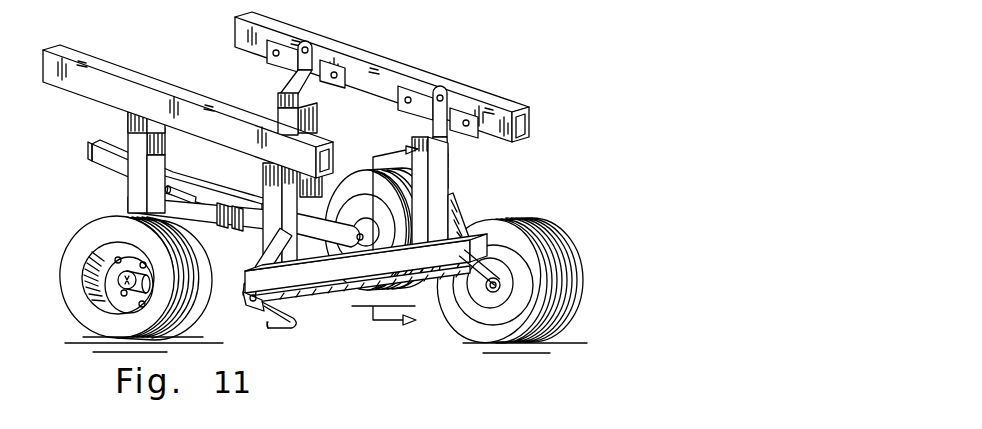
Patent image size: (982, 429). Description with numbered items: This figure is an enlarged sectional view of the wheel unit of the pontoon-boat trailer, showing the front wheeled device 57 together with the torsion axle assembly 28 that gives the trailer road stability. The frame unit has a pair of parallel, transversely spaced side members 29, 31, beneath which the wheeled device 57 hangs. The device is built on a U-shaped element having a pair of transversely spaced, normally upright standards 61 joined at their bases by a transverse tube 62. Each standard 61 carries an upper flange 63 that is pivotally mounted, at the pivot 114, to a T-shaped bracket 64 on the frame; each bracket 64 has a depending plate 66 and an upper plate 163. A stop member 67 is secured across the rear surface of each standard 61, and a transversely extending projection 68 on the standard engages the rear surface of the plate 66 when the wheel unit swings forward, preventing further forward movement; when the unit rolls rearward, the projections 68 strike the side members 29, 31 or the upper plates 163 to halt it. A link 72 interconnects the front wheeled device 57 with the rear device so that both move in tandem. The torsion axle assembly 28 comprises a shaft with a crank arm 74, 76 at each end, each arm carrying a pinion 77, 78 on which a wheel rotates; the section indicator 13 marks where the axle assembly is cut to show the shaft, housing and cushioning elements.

The section line 13 is at (387, 240).
The torsion axle assembly 28 is at (345, 311).
The side member 29 is at (356, 56).
The side member 31 is at (100, 66).
The wheeled device 57 is at (107, 203).
The standard 61 is at (128, 134).
The transverse tube 62 is at (467, 247).
The upper flange 63 is at (296, 62).
The T-shaped bracket 64 is at (292, 46).
The depending plate 66 is at (312, 92).
The stop member 67 is at (153, 125).
The projection 68 is at (318, 118).
The link 72 is at (313, 270).
The crank arm 74 is at (262, 310).
The crank arm 76 is at (481, 277).
The pinion 77 is at (280, 330).
The pinion 78 is at (500, 303).
The hanger bolt 114 is at (299, 48).
The upper plate 163 is at (325, 62).